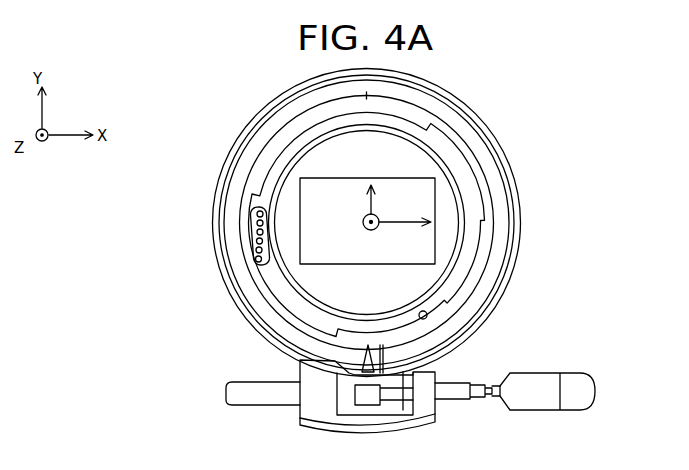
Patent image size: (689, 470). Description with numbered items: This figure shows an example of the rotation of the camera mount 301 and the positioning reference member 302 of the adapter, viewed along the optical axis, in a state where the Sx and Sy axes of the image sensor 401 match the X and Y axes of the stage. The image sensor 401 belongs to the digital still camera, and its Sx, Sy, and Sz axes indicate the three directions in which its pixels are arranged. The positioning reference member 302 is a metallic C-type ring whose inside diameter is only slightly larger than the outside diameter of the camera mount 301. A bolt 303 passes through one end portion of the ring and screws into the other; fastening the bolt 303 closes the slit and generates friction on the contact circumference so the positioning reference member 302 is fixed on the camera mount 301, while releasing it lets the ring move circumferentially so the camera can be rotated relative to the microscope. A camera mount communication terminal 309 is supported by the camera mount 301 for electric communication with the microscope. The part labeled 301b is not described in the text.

The image sensor 401 is at (413, 193).
The camera mount 301 is at (472, 197).
The positioning reference member 302 is at (472, 301).
The screw hole 301b is at (427, 317).
The camera mount communication terminal 309 is at (253, 243).
The bolt 303 is at (403, 380).